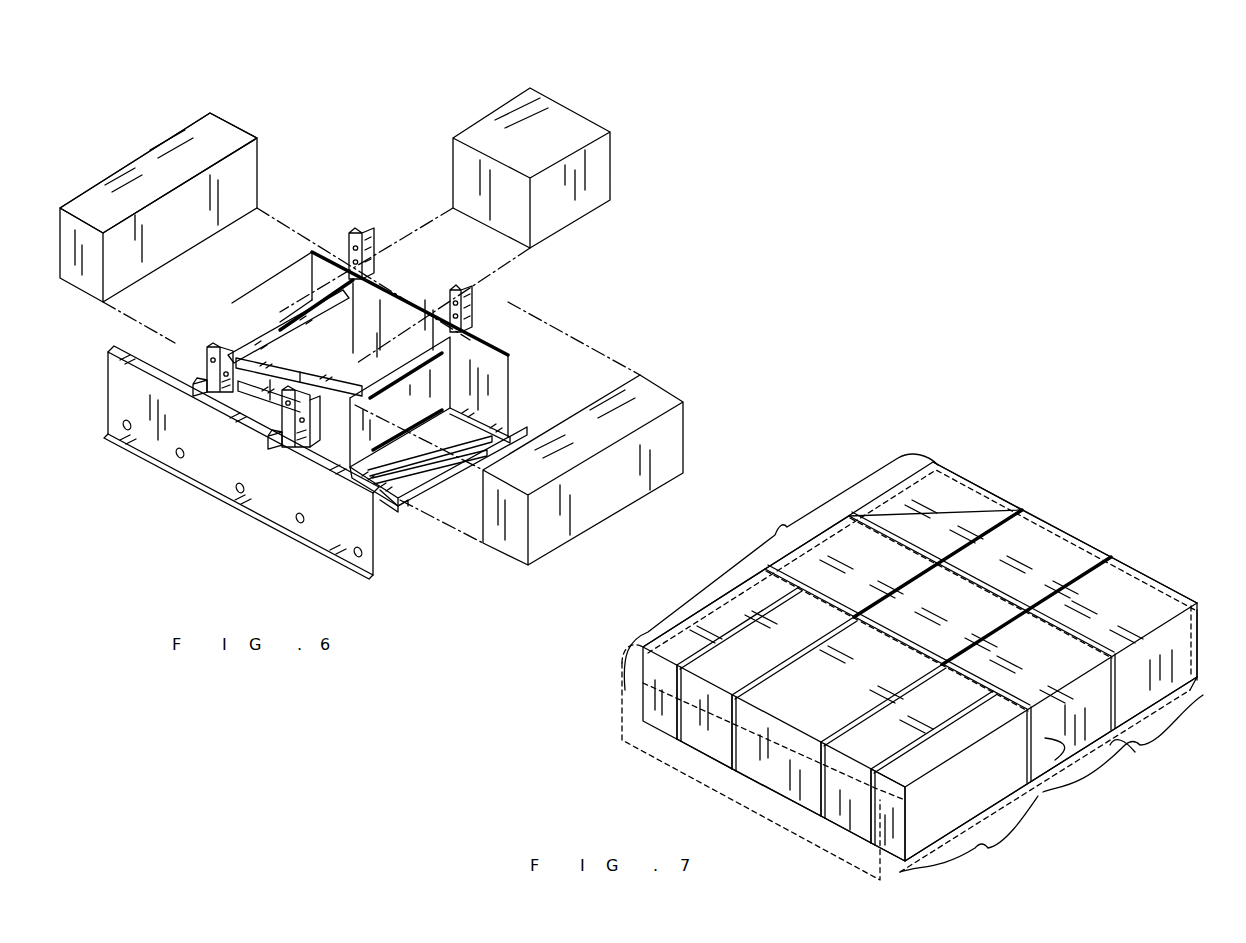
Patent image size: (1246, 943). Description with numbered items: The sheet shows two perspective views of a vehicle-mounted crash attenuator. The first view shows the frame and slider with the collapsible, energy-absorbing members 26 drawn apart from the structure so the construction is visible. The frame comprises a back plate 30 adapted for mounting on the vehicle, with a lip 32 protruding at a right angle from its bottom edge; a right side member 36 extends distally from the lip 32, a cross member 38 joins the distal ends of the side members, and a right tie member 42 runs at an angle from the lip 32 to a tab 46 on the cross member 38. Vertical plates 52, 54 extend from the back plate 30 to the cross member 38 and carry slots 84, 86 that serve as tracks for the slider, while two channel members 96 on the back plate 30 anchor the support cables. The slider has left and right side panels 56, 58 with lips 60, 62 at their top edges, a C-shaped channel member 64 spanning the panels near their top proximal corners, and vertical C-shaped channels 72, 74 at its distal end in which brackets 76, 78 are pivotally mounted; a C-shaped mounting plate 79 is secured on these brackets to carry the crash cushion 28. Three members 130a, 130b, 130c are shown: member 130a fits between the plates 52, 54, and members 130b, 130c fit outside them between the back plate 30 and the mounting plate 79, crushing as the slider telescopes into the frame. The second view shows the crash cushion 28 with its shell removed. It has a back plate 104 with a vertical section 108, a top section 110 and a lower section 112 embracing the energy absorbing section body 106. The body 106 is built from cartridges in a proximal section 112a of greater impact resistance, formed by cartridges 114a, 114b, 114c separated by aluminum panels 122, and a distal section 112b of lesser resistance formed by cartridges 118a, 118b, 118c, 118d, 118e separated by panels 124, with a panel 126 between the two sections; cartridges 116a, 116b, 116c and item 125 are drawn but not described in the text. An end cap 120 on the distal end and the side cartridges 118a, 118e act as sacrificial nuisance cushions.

In FIG. 6, the collapsible, energy-absorbing member 26 is at (262, 170).
In FIG. 7, the crash cushion 28 is at (757, 557).
In FIG. 6, the back plate 30 is at (490, 367).
In FIG. 6, the lip 32 is at (476, 438).
In FIG. 6, the right side member 36 is at (440, 481).
In FIG. 6, the cross member 38 is at (385, 502).
In FIG. 6, the right tie member 42 is at (490, 448).
In FIG. 6, the tab 46 is at (430, 500).
In FIG. 6, the vertical plate 52 is at (287, 320).
In FIG. 6, the vertical plate 54 is at (400, 402).
In FIG. 6, the left side panel 56 is at (236, 388).
In FIG. 6, the right side panel 58 is at (330, 410).
In FIG. 6, the lip 60 is at (258, 352).
In FIG. 6, the lip 62 is at (305, 450).
In FIG. 6, the C-shaped channel member 64 is at (305, 350).
In FIG. 6, the C-shaped channel 72 is at (210, 347).
In FIG. 6, the C-shaped channel 74 is at (290, 450).
In FIG. 6, the bracket 76 is at (197, 381).
In FIG. 6, the bracket 78 is at (268, 412).
In FIG. 6, the C-shaped mounting plate 79 is at (241, 462).
In FIG. 6, the slot 84 is at (330, 300).
In FIG. 6, the slot 86 is at (450, 395).
In FIG. 6, the channel member 96 is at (355, 232).
In FIG. 7, the back plate 104 is at (1197, 618).
In FIG. 7, the energy absorbing section body 106 is at (781, 572).
In FIG. 7, the vertical section 108 is at (1203, 626).
In FIG. 7, the top section 110 is at (1135, 580).
In FIG. 7, the lower section 112 is at (1190, 694).
In FIG. 7, the proximal section 112a is at (1123, 743).
In FIG. 7, the distal section 112b is at (969, 834).
In FIG. 7, the cartridge 114a is at (935, 502).
In FIG. 7, the cartridge 114b is at (1055, 554).
In FIG. 7, the cartridge 114c is at (1131, 623).
In FIG. 7, the container 116a is at (834, 557).
In FIG. 7, the container 116b is at (956, 629).
In FIG. 7, the container 116c is at (1037, 700).
In FIG. 7, the cartridge 118a is at (720, 620).
In FIG. 7, the cartridge 118b is at (765, 690).
In FIG. 7, the cartridge 118c is at (846, 731).
In FIG. 7, the cartridge 118d is at (895, 771).
In FIG. 7, the cartridge 118e is at (950, 735).
In FIG. 7, the end cap 120 is at (622, 705).
In FIG. 7, the panel 122 is at (1010, 522).
In FIG. 7, the panel 124 is at (677, 741).
In FIG. 7, the strap end 125 is at (1135, 752).
In FIG. 7, the panel 126 is at (1055, 742).
In FIG. 6, the collapsible energy-absorbing member 130a is at (585, 195).
In FIG. 6, the collapsible energy-absorbing member 130b is at (160, 166).
In FIG. 6, the collapsible energy-absorbing member 130c is at (535, 520).